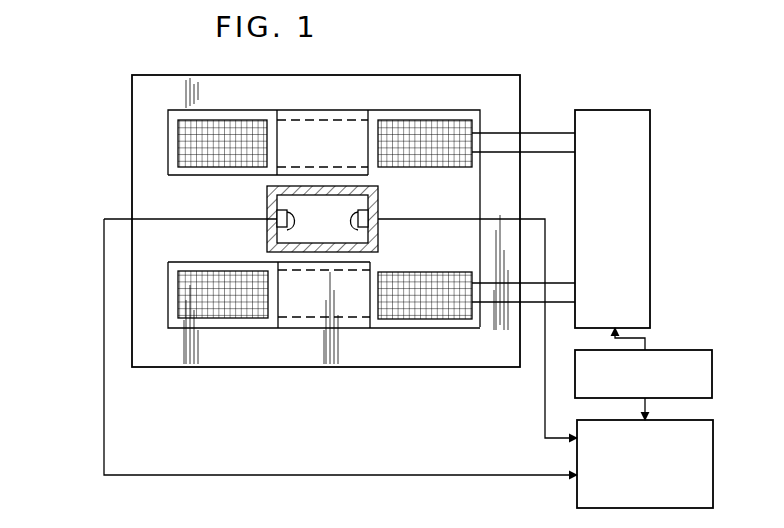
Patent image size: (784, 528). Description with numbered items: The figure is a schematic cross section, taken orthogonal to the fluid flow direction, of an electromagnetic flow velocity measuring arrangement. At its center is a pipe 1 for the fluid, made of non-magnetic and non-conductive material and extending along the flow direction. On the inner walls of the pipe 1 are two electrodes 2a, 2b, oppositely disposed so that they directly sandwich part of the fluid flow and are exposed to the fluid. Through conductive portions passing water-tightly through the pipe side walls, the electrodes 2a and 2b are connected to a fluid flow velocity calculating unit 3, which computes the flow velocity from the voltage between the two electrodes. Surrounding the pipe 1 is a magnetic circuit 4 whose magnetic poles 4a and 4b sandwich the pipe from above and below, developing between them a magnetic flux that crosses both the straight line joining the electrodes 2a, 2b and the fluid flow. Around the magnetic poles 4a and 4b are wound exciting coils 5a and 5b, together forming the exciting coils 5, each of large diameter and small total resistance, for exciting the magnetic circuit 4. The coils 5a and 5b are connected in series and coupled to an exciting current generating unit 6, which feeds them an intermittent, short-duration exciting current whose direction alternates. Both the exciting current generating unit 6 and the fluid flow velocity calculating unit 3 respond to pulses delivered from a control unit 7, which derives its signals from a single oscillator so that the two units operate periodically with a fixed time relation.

The pipe 1 is at (378, 199).
The electrode 2a is at (358, 219).
The electrode 2b is at (268, 234).
The fluid flow velocity calculating unit 3 is at (713, 460).
The magnetic circuit 4 is at (132, 97).
The magnetic pole 4a is at (277, 176).
The magnetic pole 4b is at (370, 263).
The exciting coils 5 is at (70, 127).
The exciting coil 5a is at (178, 131).
The exciting coil 5b is at (178, 272).
The exciting current generating unit 6 is at (650, 233).
The control unit 7 is at (712, 376).